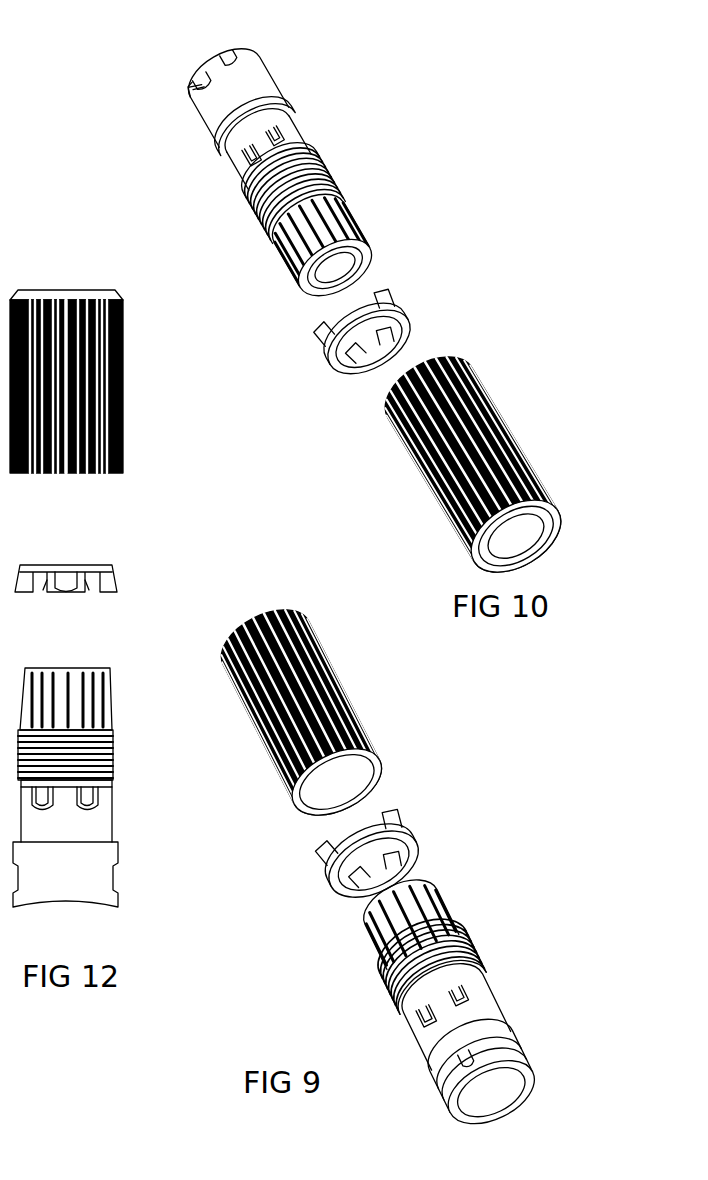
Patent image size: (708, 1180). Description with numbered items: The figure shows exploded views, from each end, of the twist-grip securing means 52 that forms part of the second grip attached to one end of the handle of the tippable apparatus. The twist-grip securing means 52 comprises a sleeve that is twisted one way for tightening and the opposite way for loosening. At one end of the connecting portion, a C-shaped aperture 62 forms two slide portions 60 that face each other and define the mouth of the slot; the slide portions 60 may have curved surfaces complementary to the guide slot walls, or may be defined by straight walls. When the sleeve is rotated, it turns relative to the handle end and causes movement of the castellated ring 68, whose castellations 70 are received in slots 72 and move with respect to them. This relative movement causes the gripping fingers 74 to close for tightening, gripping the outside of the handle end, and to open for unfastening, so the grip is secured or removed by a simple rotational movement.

In FIG. 10, the twist-grip securing means 52 is at (408, 486).
In FIG. 12, the twist-grip securing means 52 is at (127, 318).
In FIG. 9, the twist-grip securing means 52 is at (360, 677).
In FIG. 10, the slide portions 60 is at (193, 90).
In FIG. 9, the slide portions 60 is at (440, 1070).
In FIG. 10, the C-shaped aperture 62 is at (187, 106).
In FIG. 10, the castellated ring 68 is at (369, 332).
In FIG. 12, the castellated ring 68 is at (72, 574).
In FIG. 9, the castellated ring 68 is at (395, 883).
In FIG. 10, the castellations 70 is at (340, 333).
In FIG. 12, the castellations 70 is at (82, 590).
In FIG. 9, the castellations 70 is at (420, 857).
In FIG. 9, the slots 72 is at (398, 1022).
In FIG. 12, the gripping fingers 74 is at (87, 673).
In FIG. 9, the gripping fingers 74 is at (397, 892).